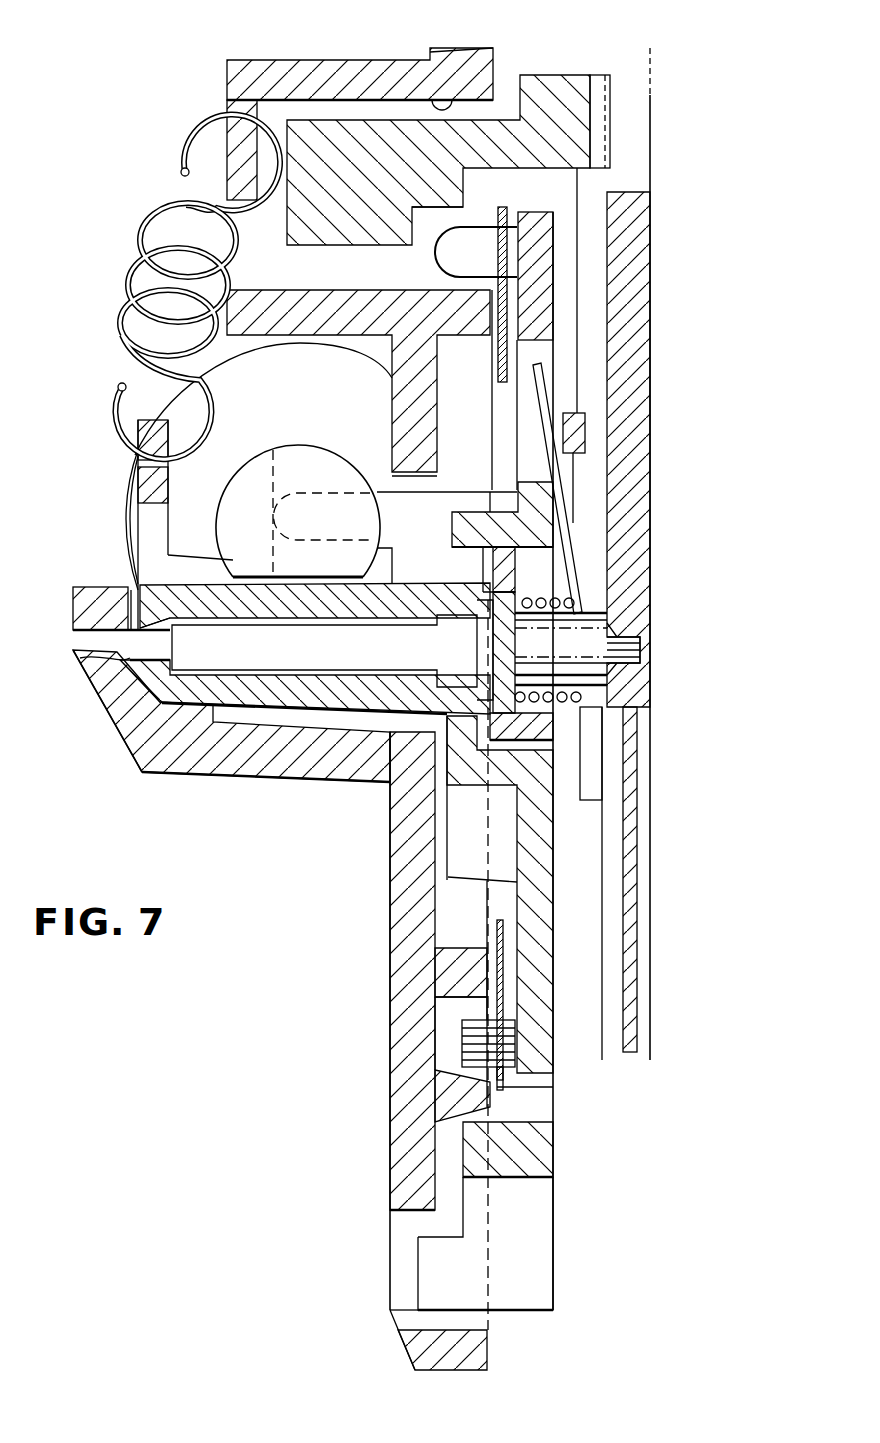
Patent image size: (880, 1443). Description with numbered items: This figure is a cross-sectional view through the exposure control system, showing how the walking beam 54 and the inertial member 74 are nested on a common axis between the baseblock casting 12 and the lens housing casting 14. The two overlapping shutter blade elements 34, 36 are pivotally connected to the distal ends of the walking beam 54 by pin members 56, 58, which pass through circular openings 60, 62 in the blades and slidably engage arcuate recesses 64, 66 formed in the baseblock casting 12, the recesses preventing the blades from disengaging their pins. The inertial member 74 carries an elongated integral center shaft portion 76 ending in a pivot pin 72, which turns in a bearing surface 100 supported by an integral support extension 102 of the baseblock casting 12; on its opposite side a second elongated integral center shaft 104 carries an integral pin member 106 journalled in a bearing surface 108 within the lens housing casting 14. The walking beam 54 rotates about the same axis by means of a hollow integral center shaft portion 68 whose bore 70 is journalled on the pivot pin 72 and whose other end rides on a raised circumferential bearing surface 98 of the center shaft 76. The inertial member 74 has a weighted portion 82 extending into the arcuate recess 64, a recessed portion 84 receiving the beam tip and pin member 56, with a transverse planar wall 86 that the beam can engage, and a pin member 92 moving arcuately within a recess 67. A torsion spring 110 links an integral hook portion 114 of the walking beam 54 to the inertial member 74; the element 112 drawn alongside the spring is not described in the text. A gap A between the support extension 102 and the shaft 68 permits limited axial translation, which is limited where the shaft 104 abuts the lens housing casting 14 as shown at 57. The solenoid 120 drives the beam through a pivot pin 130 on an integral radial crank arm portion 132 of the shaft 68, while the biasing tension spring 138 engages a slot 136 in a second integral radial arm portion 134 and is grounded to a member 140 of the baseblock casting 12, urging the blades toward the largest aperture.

The baseblock casting 12 is at (390, 1152).
The lens housing casting 14 is at (651, 322).
The shutter blade element 34 is at (555, 305).
The shutter blade element 36 is at (505, 1088).
The walking beam 54 is at (566, 327).
The pin member 56 is at (475, 240).
The abutment of shaft leading edge against lens housing casting 57 is at (645, 604).
The pin member 58 is at (470, 1047).
The circular opening 60 is at (478, 240).
The circular opening 62 is at (498, 1026).
The arcuate recess 64 is at (482, 56).
The arcuate recess 66 is at (455, 1006).
The recess 67 is at (470, 1330).
The hollow integral center shaft portion 68 is at (170, 745).
The bore 70 is at (80, 628).
The pivot pin 72 is at (74, 652).
The inertial member 74 is at (612, 96).
The elongated integral center shaft portion 76 is at (295, 668).
The weighted portion 82 is at (358, 132).
The recessed portion 84 is at (540, 197).
The transverse planar wall 86 is at (560, 190).
The pin member 92 is at (420, 1270).
The raised circumferential bearing surface 98 is at (385, 760).
The bearing surface 100 is at (103, 653).
The integral support extension 102 is at (250, 780).
The second elongated integral center shaft 104 is at (590, 700).
The integral pin member 106 is at (640, 640).
The bearing surface 108 is at (642, 654).
The torsion spring 110 is at (555, 532).
The leaf spring 112 is at (548, 378).
The integral hook portion 114 is at (588, 442).
The solenoid 120 is at (126, 490).
The pivot pin 130 is at (325, 493).
The integral radial crank arm portion 132 is at (370, 561).
The second integral radial arm portion 134 is at (134, 522).
The slot 136 is at (162, 480).
The biasing tension spring 138 is at (130, 295).
The member 140 is at (232, 178).
The gap A is at (133, 658).